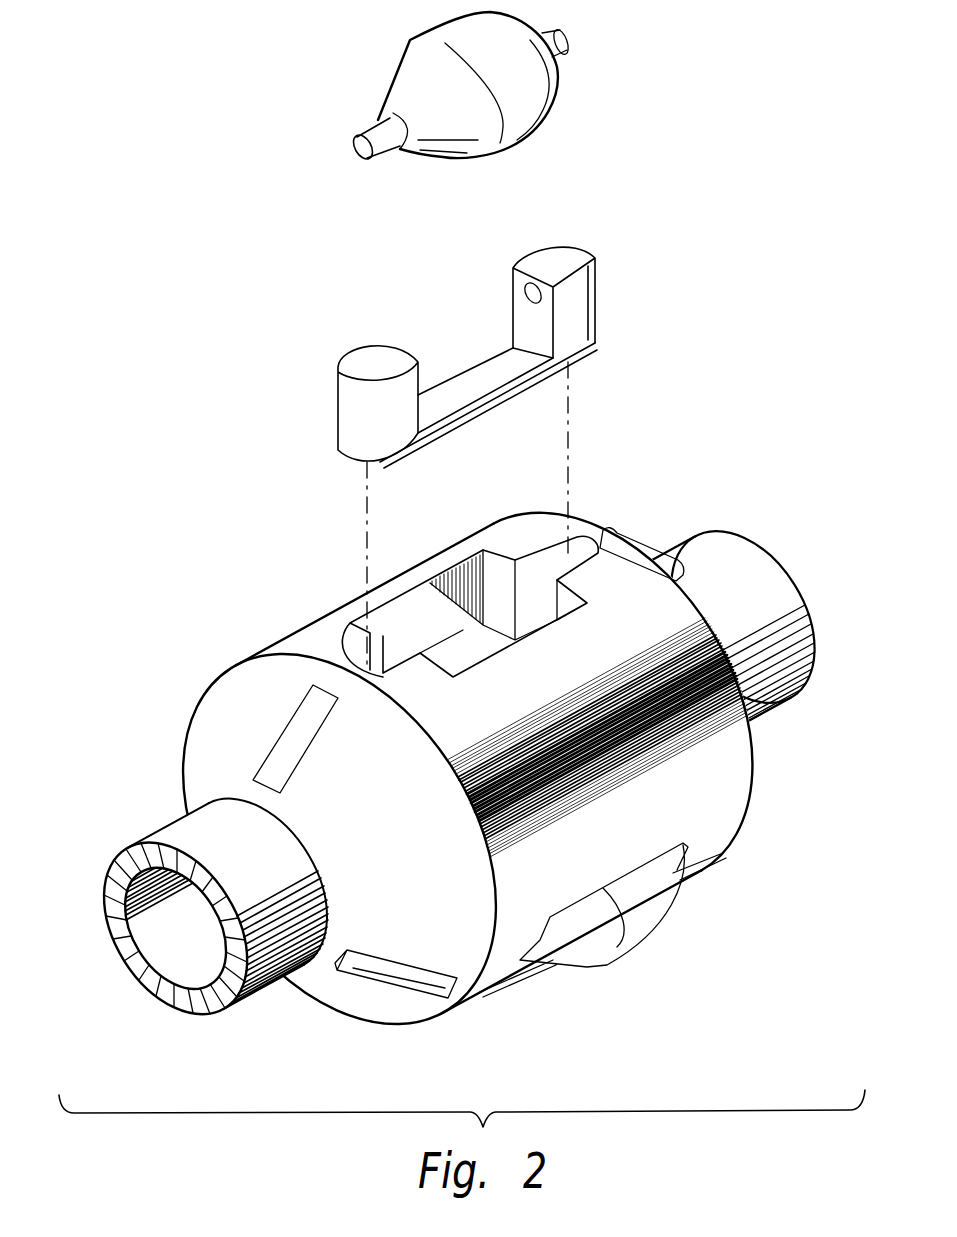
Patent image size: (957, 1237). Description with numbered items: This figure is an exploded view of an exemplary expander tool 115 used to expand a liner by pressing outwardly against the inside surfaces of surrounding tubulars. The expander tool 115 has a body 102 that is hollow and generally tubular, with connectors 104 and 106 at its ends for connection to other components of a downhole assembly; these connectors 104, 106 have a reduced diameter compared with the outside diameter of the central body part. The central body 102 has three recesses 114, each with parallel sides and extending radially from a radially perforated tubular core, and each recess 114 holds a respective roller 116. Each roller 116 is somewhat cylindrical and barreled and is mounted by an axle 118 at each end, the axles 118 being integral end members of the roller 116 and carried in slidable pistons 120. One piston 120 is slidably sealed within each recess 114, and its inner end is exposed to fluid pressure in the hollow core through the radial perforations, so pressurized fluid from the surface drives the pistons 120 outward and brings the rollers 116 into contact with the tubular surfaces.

The body 102 is at (710, 900).
The connector 104 is at (733, 558).
The connector 106 is at (178, 828).
The recess 114 is at (473, 650).
The expander tool 115 is at (142, 472).
The roller 116 is at (540, 102).
The axle 118 is at (358, 120).
The piston 120 is at (580, 253).